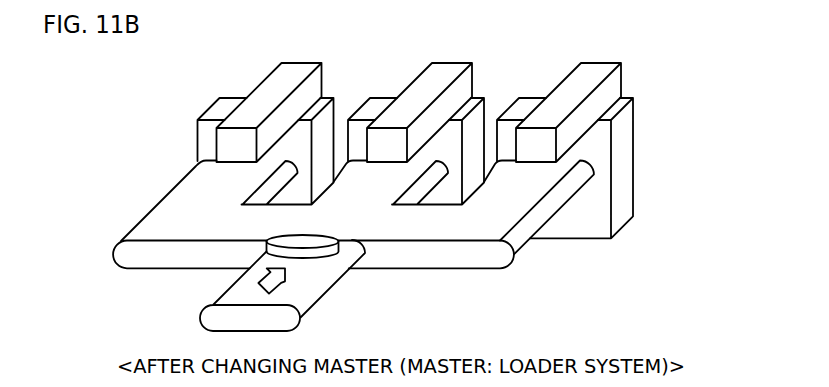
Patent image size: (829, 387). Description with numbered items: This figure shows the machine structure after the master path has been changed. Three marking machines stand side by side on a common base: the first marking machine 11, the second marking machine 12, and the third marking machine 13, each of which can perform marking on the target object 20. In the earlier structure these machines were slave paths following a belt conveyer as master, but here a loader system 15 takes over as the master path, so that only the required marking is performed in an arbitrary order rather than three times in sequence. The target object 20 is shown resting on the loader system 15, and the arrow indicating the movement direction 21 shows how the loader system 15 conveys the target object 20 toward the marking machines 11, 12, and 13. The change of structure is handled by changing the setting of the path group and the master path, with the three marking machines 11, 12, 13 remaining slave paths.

The first marking machine 11 is at (597, 70).
The second marking machine 12 is at (447, 70).
The third marking machine 13 is at (295, 70).
The loader system 15 is at (167, 193).
The target object 20 is at (315, 254).
The movement direction 21 is at (258, 285).